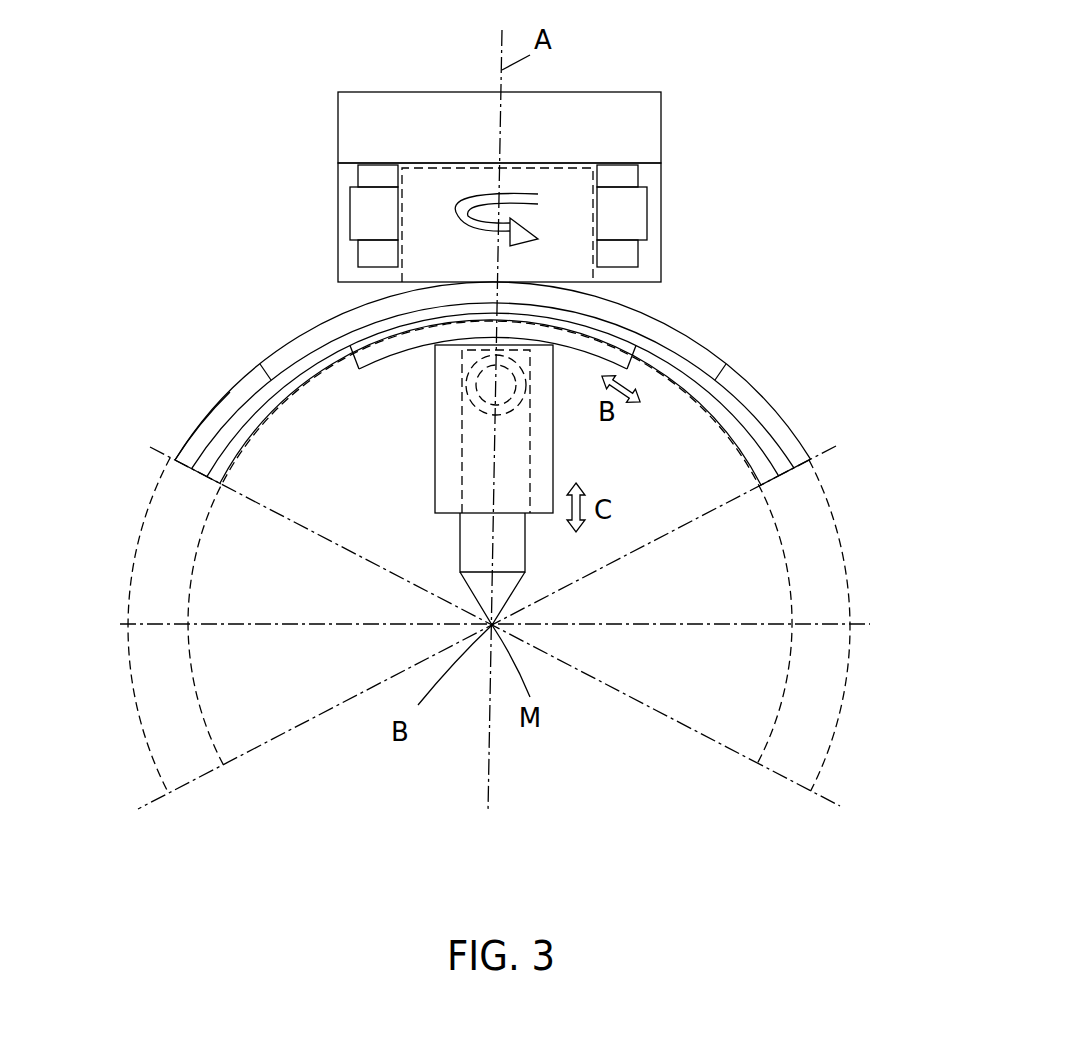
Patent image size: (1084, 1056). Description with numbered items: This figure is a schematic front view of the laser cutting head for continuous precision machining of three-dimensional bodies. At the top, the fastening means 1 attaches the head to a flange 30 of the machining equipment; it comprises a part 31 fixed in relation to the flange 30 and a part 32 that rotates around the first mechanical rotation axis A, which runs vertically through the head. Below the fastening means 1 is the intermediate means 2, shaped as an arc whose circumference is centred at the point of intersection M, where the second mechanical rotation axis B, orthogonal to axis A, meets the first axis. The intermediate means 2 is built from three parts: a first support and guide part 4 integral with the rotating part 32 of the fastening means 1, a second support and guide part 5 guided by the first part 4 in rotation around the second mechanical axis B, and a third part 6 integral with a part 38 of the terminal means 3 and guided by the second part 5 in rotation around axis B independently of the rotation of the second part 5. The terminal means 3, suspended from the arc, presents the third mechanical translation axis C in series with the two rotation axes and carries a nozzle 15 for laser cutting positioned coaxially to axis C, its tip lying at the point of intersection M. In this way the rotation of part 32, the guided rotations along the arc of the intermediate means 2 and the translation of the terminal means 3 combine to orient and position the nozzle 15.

The fastening means 1 is at (501, 161).
The intermediate means 2 is at (487, 367).
The terminal means 3 is at (485, 590).
The first support and guide part 4 is at (287, 350).
The second support and guide part 5 is at (222, 423).
The third part 6 is at (398, 348).
The nozzle 15 is at (456, 593).
The flange 30 is at (378, 115).
The part of the fastening means 31 is at (343, 175).
The part of the fastening means 32 is at (428, 250).
The part of the terminal means 38 is at (447, 470).